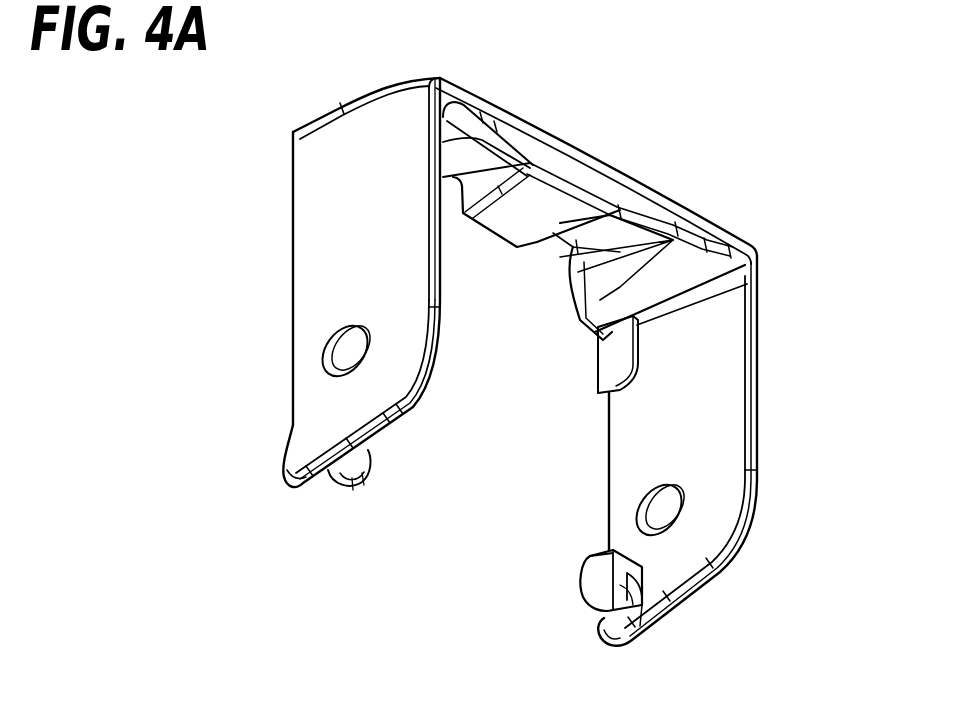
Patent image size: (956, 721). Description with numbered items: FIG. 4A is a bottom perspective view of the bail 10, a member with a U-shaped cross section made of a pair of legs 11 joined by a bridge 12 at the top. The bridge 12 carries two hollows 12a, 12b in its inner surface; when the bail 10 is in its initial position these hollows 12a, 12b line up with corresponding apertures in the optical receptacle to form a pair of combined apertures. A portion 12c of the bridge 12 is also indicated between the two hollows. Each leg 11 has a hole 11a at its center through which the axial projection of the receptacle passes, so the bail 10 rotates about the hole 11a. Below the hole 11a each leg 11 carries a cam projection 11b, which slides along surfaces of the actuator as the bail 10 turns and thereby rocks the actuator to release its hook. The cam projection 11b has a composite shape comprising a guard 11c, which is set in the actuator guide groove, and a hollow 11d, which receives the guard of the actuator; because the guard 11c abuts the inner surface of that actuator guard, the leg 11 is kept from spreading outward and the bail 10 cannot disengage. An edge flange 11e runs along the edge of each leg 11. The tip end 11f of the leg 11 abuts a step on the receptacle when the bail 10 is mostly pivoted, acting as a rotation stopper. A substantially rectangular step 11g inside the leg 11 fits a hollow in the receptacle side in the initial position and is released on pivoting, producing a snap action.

The bail 10 is at (678, 86).
The leg 11 is at (320, 244).
The hole 11a is at (330, 354).
The cam projection 11b is at (592, 582).
The guard 11c is at (362, 477).
The hollow 11d is at (643, 628).
The edge flange 11e is at (445, 290).
The tip end 11f is at (292, 484).
The step 11g is at (612, 354).
The bridge 12 is at (565, 168).
The hollow 12a is at (457, 172).
The hollow 12b is at (570, 282).
The connecting portion 12c is at (519, 198).